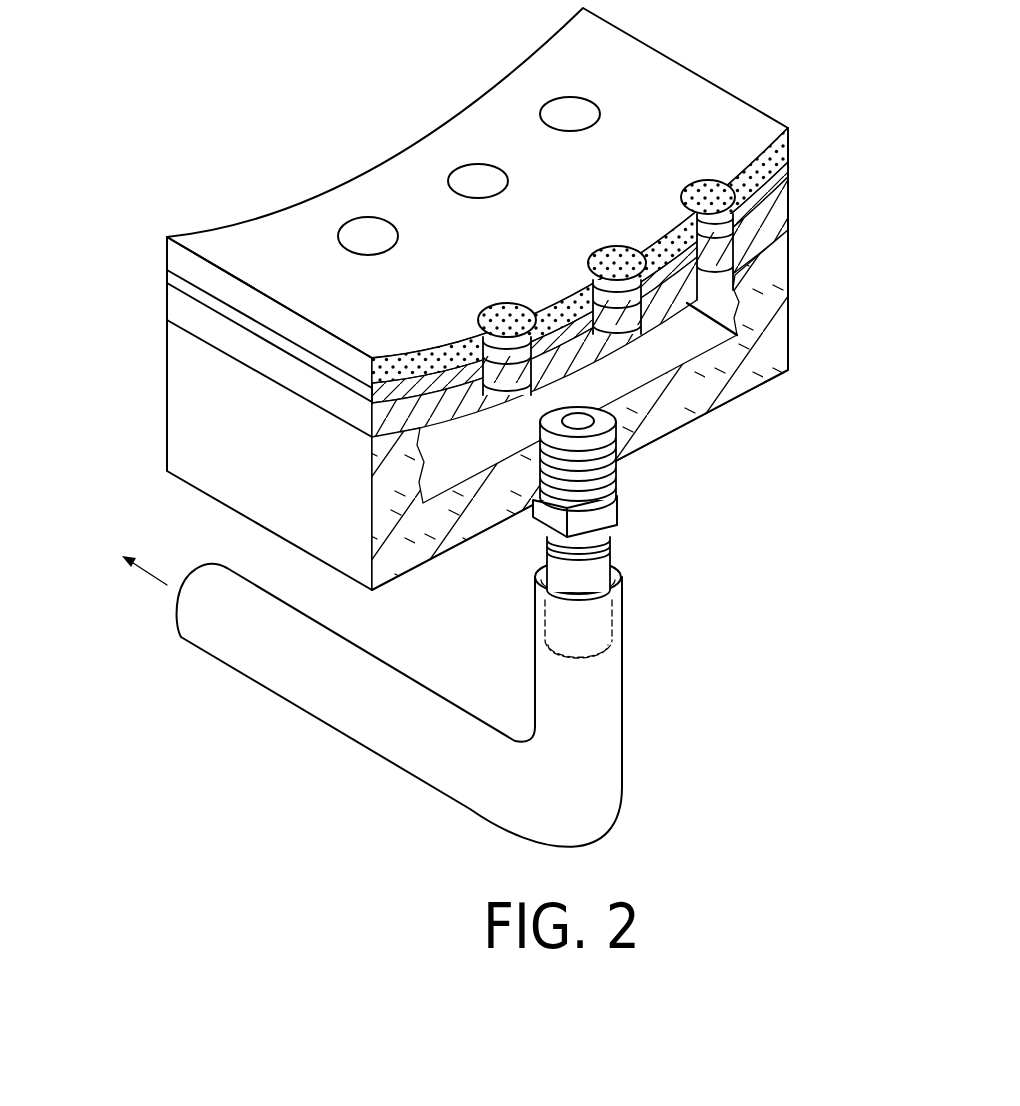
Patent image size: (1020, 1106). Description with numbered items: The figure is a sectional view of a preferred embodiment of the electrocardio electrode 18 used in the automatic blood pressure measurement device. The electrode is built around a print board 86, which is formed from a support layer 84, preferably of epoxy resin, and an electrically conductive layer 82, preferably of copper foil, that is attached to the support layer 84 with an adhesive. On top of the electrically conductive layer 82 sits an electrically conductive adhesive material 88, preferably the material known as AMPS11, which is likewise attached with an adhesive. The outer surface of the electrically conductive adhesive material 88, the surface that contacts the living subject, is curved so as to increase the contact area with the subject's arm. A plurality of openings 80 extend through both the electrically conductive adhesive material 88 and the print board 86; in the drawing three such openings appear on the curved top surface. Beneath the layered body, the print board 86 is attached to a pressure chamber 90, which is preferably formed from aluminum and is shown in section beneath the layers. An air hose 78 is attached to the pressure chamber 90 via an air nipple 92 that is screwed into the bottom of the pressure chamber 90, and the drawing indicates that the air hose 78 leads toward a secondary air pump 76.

The electrocardio electrode 18 is at (527, 299).
The openings 80 is at (352, 232).
The electrically conductive adhesive material 88 is at (782, 147).
The electrically conductive layer 82 is at (779, 177).
The support layer 84 is at (766, 217).
The print board 86 is at (629, 268).
The pressure chamber 90 is at (686, 350).
The air nipple 92 is at (600, 551).
The air hose 78 is at (600, 707).
The secondary air pump 76 is at (119, 542).